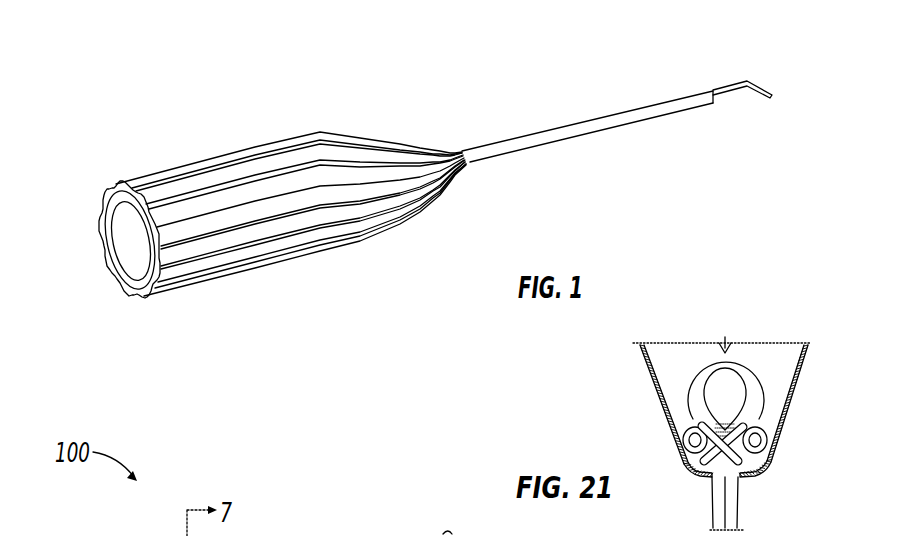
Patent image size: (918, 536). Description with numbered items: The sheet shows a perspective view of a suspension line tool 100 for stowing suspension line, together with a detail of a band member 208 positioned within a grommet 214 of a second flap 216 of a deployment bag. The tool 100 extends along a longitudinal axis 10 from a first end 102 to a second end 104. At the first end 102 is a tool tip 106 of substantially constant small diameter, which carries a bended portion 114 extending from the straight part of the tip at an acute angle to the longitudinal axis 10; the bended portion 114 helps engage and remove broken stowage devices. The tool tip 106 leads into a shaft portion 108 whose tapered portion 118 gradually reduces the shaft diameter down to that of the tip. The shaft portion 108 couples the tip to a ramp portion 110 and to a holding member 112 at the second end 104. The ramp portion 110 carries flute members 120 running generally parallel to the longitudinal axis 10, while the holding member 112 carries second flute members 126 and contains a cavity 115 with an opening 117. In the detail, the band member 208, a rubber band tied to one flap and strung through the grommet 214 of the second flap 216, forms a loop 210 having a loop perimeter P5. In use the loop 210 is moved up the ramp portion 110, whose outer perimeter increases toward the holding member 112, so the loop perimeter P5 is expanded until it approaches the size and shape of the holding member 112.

In FIG. 1, the longitudinal axis 10 is at (806, 71).
In FIG. 1, the suspension line tool 100 is at (175, 47).
In FIG. 1, the first end 102 is at (771, 124).
In FIG. 1, the second end 104 is at (129, 322).
In FIG. 1, the tool tip 106 is at (727, 87).
In FIG. 1, the shaft portion 108 is at (560, 123).
In FIG. 1, the ramp portion 110 is at (383, 138).
In FIG. 1, the holding member 112 is at (190, 163).
In FIG. 1, the bended portion 114 is at (775, 97).
In FIG. 1, the cavity 115 is at (130, 255).
In FIG. 1, the opening 117 is at (118, 223).
In FIG. 1, the tapered portion 118 is at (715, 100).
In FIG. 1, the flute members 120 is at (430, 193).
In FIG. 1, the second flute members 126 is at (291, 246).
In FIG. 21, the band member 208 is at (718, 510).
In FIG. 21, the loop 210 is at (707, 363).
In FIG. 21, the grommet 214 is at (687, 447).
In FIG. 21, the second flap 216 is at (787, 433).
In FIG. 21, the loop perimeter P5 is at (737, 363).